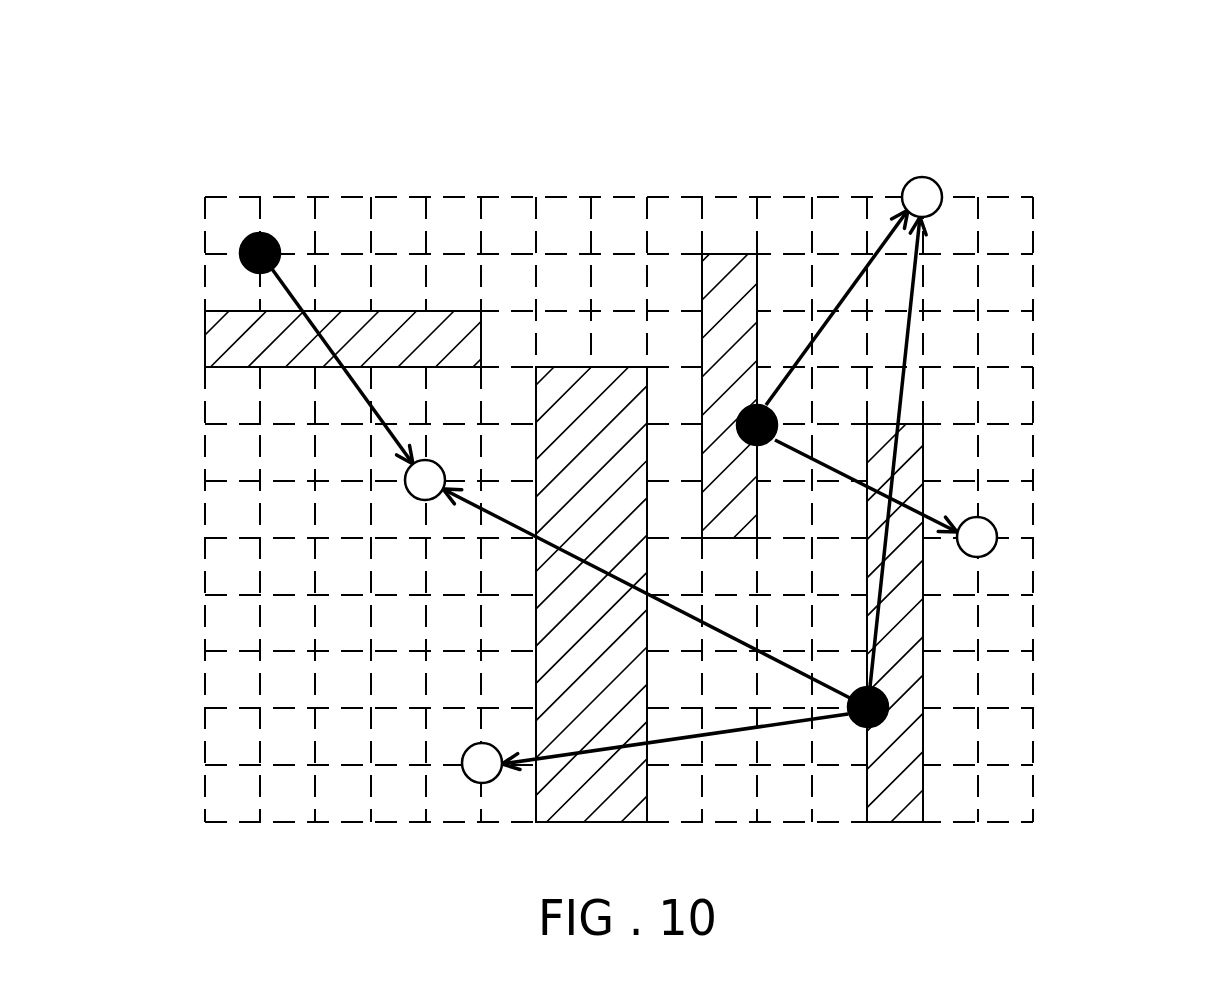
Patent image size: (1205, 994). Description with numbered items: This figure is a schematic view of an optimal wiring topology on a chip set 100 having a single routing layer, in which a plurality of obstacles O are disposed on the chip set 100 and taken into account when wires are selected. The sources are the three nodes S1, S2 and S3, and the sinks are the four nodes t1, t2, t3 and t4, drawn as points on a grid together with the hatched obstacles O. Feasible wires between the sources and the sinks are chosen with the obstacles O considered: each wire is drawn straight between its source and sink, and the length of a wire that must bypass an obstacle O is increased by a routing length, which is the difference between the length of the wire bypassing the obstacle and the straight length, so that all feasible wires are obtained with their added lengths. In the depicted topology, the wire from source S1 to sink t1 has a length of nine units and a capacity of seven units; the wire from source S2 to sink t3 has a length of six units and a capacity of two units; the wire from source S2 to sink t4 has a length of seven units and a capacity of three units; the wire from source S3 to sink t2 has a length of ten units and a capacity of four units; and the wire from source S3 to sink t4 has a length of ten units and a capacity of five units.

The chip set 100 is at (1040, 168).
The obstacle O is at (722, 254).
The source S1 is at (316, 254).
The source S2 is at (810, 415).
The source S3 is at (922, 709).
The sink t1 is at (375, 482).
The sink t2 is at (433, 765).
The sink t3 is at (968, 516).
The sink t4 is at (957, 216).